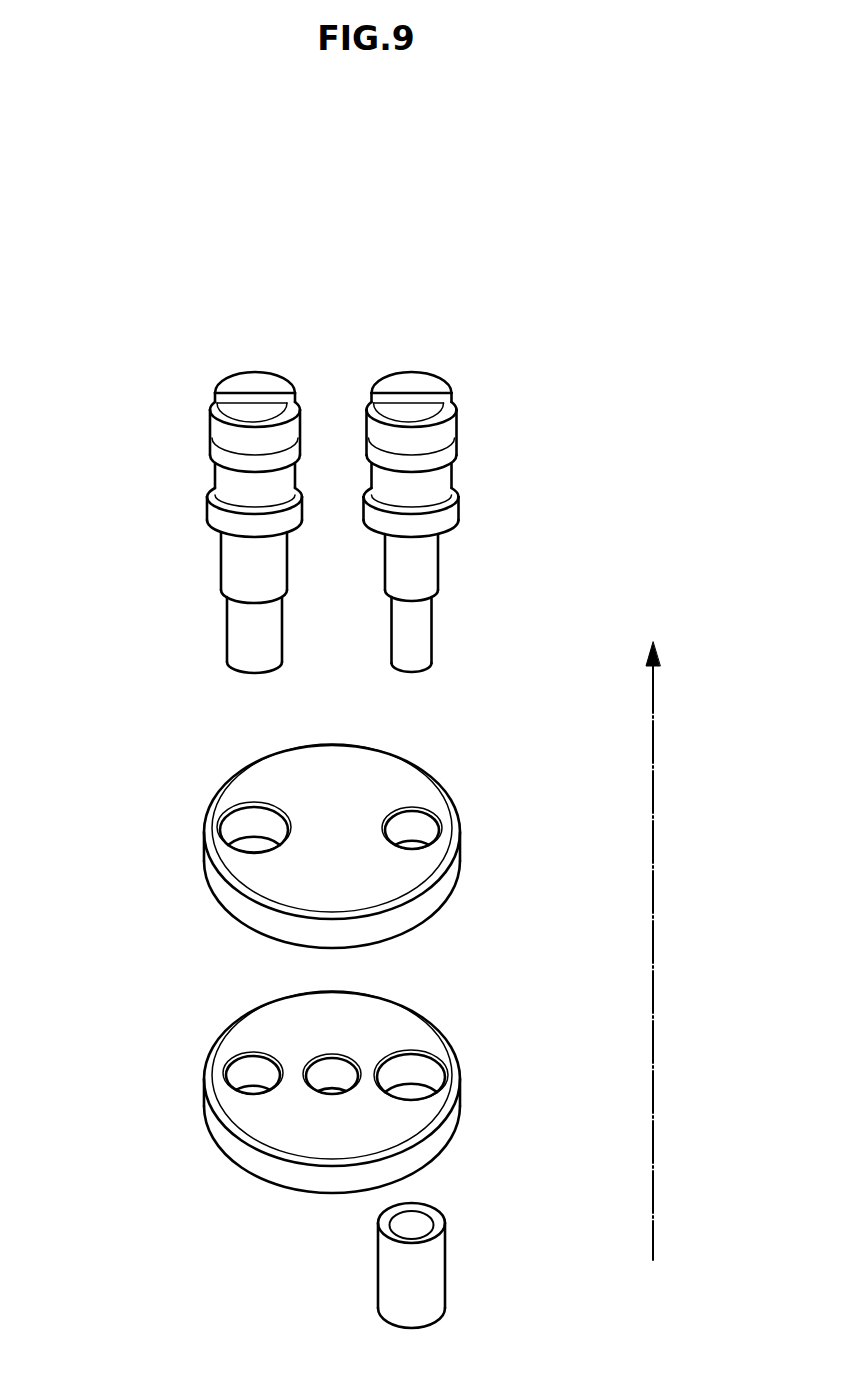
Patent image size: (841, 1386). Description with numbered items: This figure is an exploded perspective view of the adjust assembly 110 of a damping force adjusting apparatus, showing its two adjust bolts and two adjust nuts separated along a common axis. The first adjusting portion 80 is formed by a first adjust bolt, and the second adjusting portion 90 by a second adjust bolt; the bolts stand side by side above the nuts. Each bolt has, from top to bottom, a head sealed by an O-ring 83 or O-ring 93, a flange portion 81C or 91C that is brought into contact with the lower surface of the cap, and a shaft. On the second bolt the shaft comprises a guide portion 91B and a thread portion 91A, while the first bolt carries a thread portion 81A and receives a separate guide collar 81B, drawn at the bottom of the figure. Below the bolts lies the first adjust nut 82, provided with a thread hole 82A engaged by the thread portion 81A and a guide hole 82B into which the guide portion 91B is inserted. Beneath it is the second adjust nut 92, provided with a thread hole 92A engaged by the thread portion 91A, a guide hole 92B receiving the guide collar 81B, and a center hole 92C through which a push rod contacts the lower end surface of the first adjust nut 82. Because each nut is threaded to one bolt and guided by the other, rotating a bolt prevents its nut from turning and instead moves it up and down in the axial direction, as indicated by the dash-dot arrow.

The adjust assembly 110 is at (133, 262).
The second adjusting portion 90 is at (261, 347).
The O-ring 93 is at (209, 440).
The flange portion 91C is at (208, 500).
The guide portion 91B is at (220, 557).
The thread portion 91A is at (227, 621).
The first adjusting portion 80 is at (419, 347).
The O-ring 83 is at (458, 438).
The flange portion 81C is at (458, 500).
The thread portion 81A is at (440, 553).
The guide collar 81B is at (445, 1270).
The first adjust nut 82 is at (367, 781).
The thread hole 82A is at (417, 833).
The guide hole 82B is at (247, 832).
The second adjust nut 92 is at (367, 1027).
The thread hole 92A is at (253, 1078).
The guide hole 92B is at (418, 1072).
The center hole 92C is at (308, 1088).